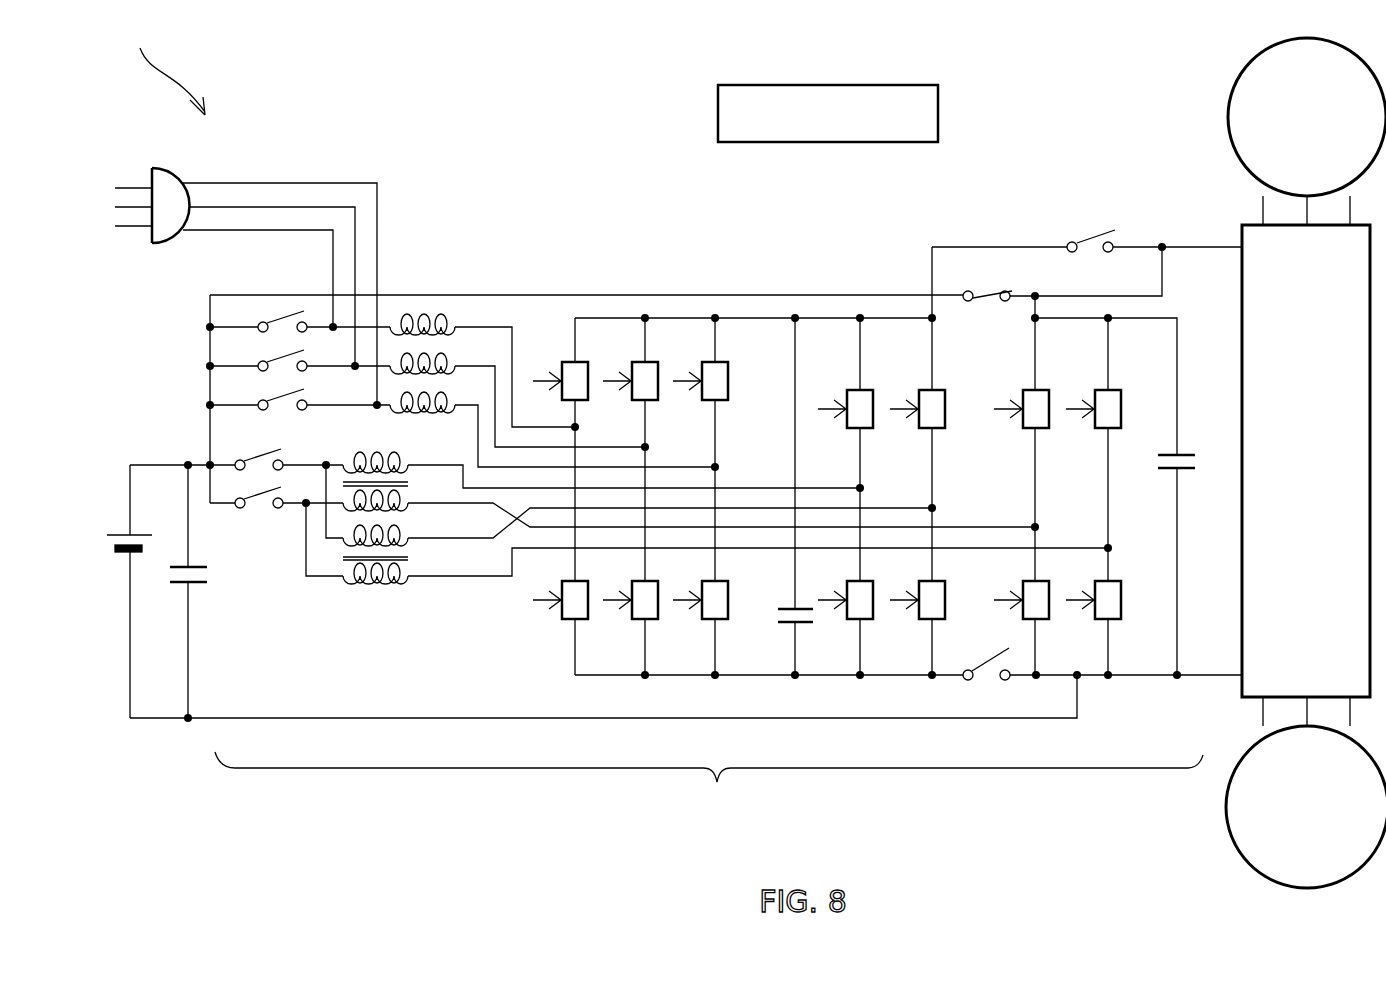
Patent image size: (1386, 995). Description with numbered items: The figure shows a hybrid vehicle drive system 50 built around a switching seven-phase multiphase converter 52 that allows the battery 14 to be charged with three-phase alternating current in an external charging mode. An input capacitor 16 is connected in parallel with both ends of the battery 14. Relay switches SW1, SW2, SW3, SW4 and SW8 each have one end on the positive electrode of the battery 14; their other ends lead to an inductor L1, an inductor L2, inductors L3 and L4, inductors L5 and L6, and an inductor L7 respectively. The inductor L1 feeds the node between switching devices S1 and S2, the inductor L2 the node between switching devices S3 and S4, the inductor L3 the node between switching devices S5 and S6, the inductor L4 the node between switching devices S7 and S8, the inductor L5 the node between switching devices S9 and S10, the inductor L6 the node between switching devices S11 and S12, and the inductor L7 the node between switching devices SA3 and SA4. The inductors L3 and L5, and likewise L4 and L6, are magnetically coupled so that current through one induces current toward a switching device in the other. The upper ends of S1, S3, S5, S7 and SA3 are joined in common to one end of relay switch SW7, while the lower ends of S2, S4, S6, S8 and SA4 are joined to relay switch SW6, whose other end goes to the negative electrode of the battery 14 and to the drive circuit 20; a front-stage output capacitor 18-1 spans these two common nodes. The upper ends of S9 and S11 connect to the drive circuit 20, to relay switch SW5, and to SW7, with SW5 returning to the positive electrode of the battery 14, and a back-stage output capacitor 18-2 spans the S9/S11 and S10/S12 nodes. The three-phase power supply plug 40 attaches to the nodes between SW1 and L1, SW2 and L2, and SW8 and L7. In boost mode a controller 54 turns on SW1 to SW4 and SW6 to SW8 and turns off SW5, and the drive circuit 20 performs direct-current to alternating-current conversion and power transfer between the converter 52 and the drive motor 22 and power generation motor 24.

The hybrid vehicle drive system 50 is at (122, 42).
The three-phase power supply plug 40 is at (178, 168).
The battery 14 is at (113, 535).
The input capacitor 16 is at (200, 585).
The switching seven-phase multiphase converter 52 is at (709, 781).
The controller 54 is at (865, 85).
The drive motor 22 is at (1227, 95).
The drive circuit 20 is at (1242, 388).
The power generation motor 24 is at (1235, 847).
The front-stage output capacitor 18-1 is at (778, 622).
The back-stage output capacitor 18-2 is at (1179, 478).
The relay switch SW1 is at (275, 312).
The relay switch SW2 is at (277, 352).
The relay switch SW3 is at (260, 450).
The relay switch SW4 is at (262, 507).
The relay switch SW5 is at (990, 295).
The relay switch SW6 is at (990, 660).
The relay switch SW7 is at (1098, 232).
The relay switch SW8 is at (277, 392).
The inductor L1 is at (423, 315).
The inductor L2 is at (440, 355).
The inductor L3 is at (378, 456).
The inductor L4 is at (390, 532).
The inductor L5 is at (404, 492).
The inductor L6 is at (402, 572).
The inductor L7 is at (440, 396).
The switching device S1 is at (587, 362).
The switching device S2 is at (562, 620).
The switching device S3 is at (657, 362).
The switching device S4 is at (634, 620).
The switching device S5 is at (873, 390).
The switching device S6 is at (873, 620).
The switching device S7 is at (945, 390).
The switching device S8 is at (945, 583).
The switching device S9 is at (1047, 390).
The switching device S10 is at (1048, 620).
The switching device S11 is at (1120, 390).
The switching device S12 is at (1120, 620).
The switching device SA3 is at (728, 364).
The switching device SA4 is at (728, 590).